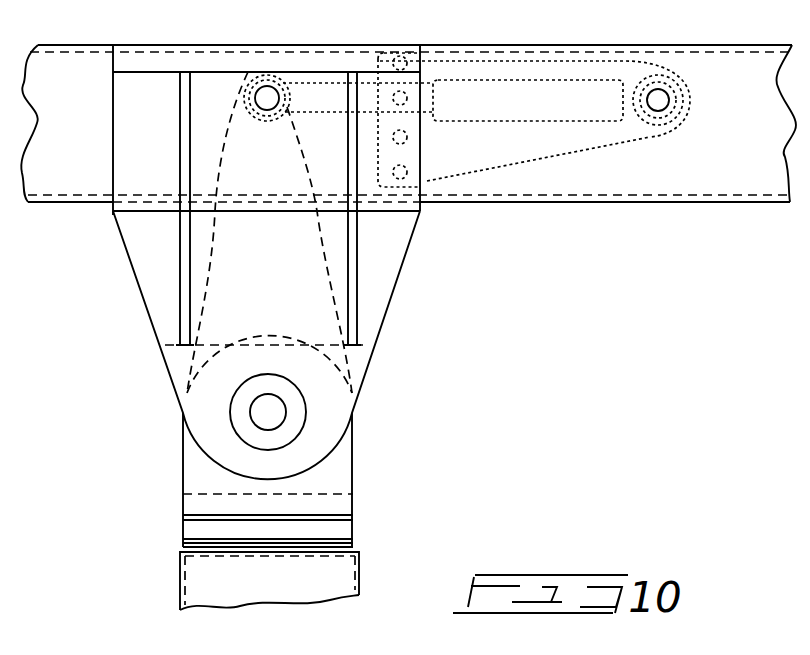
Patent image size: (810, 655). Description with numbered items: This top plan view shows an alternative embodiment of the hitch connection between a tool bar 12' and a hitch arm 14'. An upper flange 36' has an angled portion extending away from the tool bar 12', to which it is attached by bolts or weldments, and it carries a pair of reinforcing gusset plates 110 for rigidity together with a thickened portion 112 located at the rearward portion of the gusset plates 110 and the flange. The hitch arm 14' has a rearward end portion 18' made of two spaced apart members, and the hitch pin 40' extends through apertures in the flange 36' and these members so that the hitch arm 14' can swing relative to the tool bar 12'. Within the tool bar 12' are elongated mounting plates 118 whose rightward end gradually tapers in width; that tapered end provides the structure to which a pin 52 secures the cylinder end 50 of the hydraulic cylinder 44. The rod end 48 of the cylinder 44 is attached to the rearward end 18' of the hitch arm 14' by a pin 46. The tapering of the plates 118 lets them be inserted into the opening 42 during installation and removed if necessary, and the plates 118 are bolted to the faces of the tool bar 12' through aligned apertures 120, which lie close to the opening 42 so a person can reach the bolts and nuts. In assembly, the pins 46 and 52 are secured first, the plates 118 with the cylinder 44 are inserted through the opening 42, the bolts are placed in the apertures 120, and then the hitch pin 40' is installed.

The tool bar 12' is at (408, 151).
The hitch arm 14' is at (293, 590).
The rearward end portion 18' is at (264, 200).
The upper flange 36' is at (272, 379).
The hitch pin 40' is at (320, 433).
The opening 42 is at (368, 212).
The hydraulic cylinder 44 is at (490, 80).
The pin 46 is at (272, 90).
The rod end 48 is at (333, 83).
The cylinder end 50 is at (640, 93).
The pin 52 is at (690, 80).
The reinforcing gusset plates 110 is at (182, 288).
The thickened portion 112 is at (130, 45).
The elongated mounting plates 118 is at (502, 168).
The apertures 120 is at (406, 57).